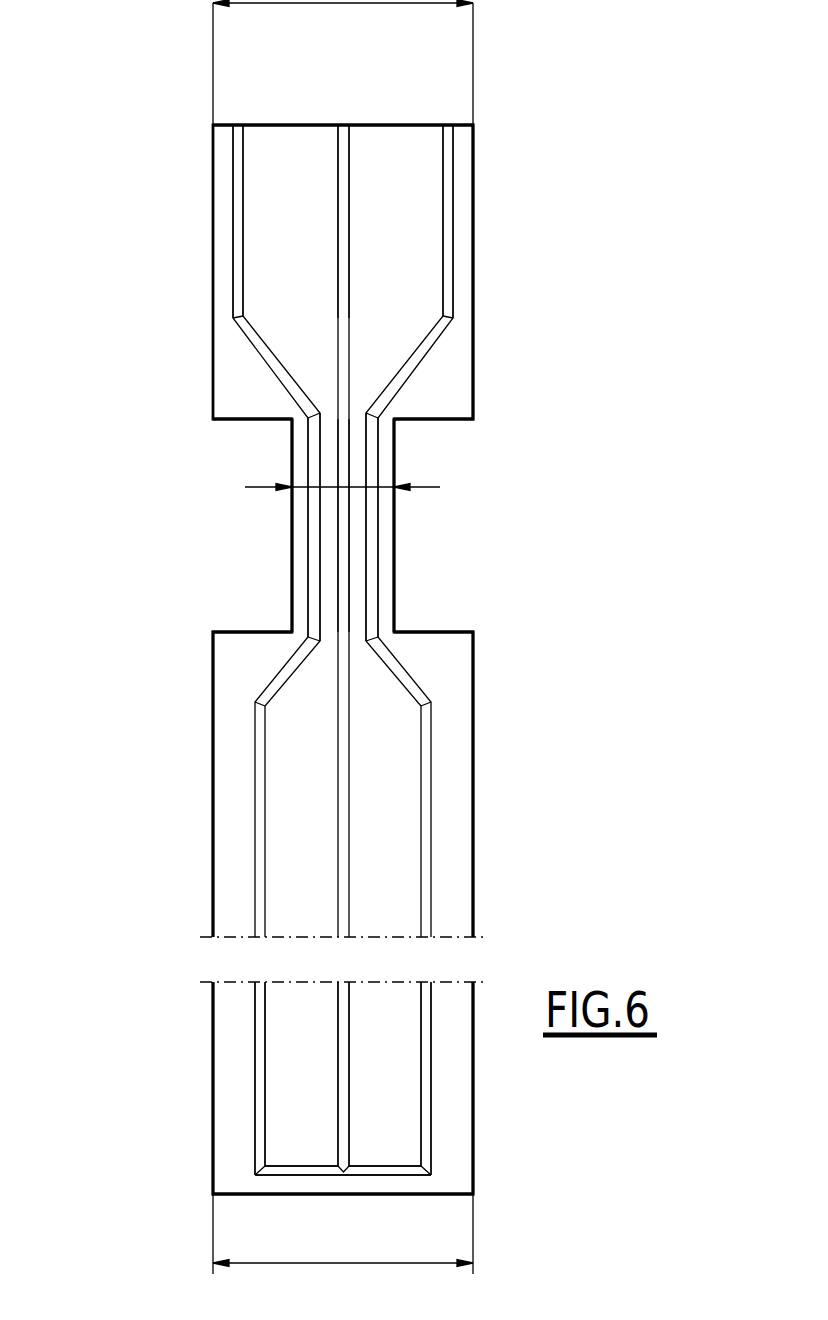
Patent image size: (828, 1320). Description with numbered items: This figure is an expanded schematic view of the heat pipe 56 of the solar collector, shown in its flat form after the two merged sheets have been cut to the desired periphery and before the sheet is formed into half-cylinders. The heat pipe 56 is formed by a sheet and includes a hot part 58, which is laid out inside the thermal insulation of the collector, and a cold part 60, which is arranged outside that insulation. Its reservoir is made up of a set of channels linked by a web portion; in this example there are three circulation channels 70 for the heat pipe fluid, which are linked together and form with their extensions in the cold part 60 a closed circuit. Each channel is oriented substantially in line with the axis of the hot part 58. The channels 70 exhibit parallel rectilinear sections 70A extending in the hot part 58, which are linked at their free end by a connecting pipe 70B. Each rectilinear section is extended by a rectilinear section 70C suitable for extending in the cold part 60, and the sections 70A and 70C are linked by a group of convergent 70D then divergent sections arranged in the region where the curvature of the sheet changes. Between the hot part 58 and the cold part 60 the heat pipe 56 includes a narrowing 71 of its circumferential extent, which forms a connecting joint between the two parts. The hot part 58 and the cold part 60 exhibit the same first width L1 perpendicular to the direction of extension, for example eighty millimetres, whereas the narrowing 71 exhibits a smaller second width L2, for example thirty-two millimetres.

The heat pipe 56 is at (518, 615).
The hot part 58 is at (192, 863).
The cold part 60 is at (192, 290).
The circulation channels 70 is at (438, 166).
The parallel rectilinear sections 70A is at (342, 1073).
The connecting pipe 70B is at (390, 1173).
The rectilinear section 70C is at (345, 245).
The convergent sections 70D is at (343, 582).
The narrowing 71 is at (397, 560).
The first width L1 is at (343, 637).
The second width L2 is at (358, 486).